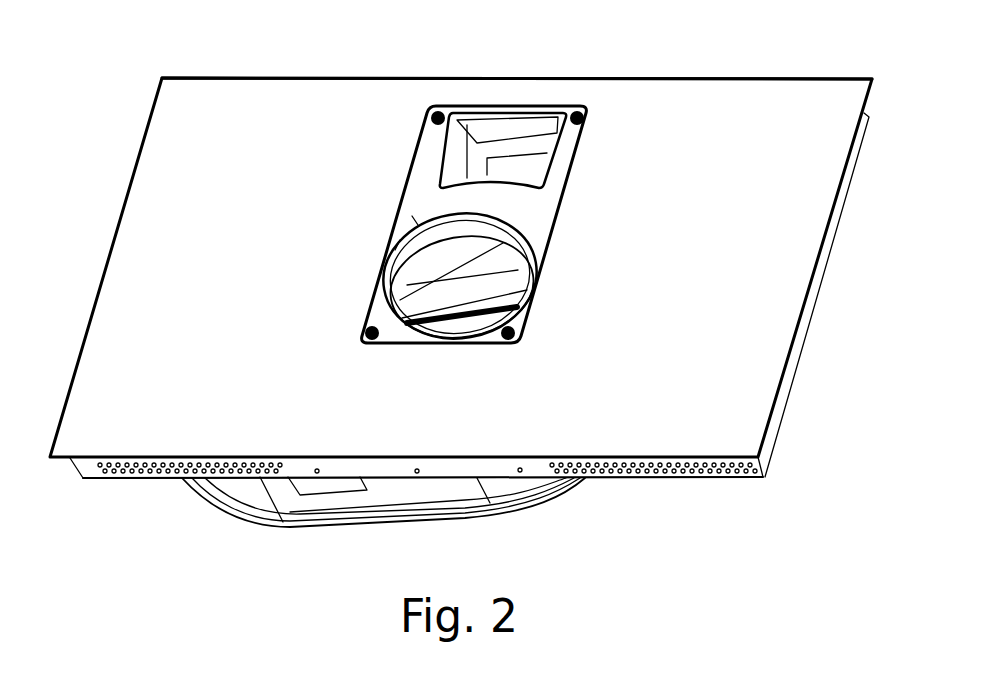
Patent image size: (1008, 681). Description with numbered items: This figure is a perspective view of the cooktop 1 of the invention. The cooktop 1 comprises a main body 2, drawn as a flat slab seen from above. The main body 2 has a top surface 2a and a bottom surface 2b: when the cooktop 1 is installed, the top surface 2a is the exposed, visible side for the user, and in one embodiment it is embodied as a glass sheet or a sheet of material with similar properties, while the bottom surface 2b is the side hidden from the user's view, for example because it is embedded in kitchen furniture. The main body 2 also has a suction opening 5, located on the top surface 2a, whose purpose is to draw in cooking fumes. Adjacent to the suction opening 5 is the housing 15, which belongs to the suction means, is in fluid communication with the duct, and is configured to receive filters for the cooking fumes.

The cooktop 1 is at (132, 98).
The main body 2 is at (797, 350).
The top surface 2a is at (705, 117).
The bottom surface 2b is at (630, 478).
The suction opening 5 is at (530, 232).
The housing 15 is at (463, 150).